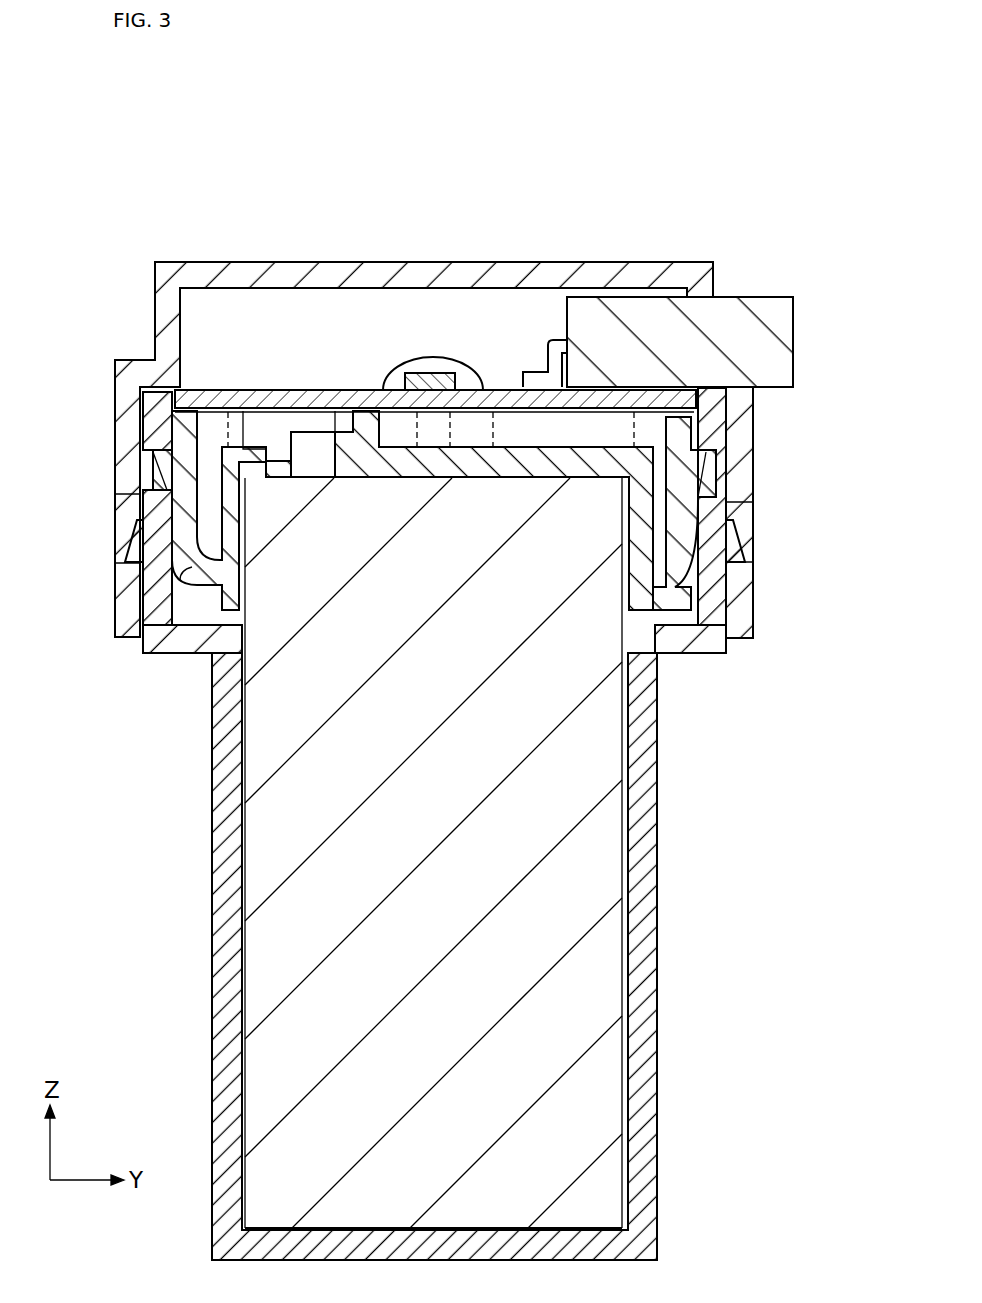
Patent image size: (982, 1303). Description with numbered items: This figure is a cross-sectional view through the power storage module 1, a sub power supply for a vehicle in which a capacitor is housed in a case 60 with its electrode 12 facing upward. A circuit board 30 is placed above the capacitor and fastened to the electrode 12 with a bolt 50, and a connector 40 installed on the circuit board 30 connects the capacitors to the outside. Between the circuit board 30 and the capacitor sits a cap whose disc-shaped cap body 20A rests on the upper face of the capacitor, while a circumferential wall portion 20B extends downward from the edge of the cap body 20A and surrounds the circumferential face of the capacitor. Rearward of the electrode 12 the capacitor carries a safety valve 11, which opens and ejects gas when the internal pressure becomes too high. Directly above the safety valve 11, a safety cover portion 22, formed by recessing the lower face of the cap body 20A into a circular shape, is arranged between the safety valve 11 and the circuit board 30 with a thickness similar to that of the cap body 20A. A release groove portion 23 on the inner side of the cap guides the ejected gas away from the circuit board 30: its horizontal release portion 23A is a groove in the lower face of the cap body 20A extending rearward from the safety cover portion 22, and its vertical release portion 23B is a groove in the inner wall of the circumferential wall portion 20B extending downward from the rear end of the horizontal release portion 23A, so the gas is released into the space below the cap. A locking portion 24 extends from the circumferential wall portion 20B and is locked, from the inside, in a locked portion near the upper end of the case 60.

The power storage module 1 is at (617, 121).
The safety valve 11 is at (250, 660).
The electrode 12 is at (493, 428).
The cap body 20A is at (397, 445).
The circumferential wall portion 20B is at (215, 471).
The safety cover portion 22 is at (233, 657).
The release groove portion 23 is at (42, 548).
The horizontal release portion 23A is at (240, 508).
The vertical release portion 23B is at (240, 587).
The locking portion 24 is at (198, 426).
The circuit board 30 is at (268, 407).
The connector 40 is at (735, 297).
The bolt 50 is at (442, 357).
The case 60 is at (657, 795).